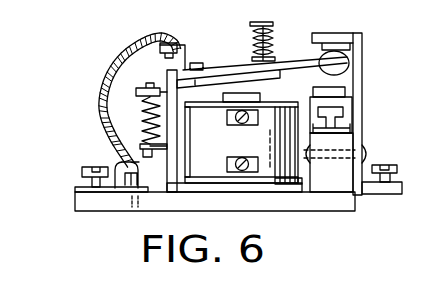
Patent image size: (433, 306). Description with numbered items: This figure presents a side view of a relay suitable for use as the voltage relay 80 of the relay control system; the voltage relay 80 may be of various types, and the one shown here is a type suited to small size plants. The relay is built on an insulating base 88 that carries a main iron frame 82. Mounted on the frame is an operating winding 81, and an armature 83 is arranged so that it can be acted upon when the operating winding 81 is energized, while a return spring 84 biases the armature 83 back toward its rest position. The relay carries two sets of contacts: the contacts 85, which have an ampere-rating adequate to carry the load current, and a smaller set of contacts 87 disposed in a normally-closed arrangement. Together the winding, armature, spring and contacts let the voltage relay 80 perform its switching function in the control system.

The voltage relay 80 is at (98, 71).
The operating winding 81 is at (265, 162).
The main iron frame 82 is at (185, 187).
The armature 83 is at (226, 77).
The return spring 84 is at (148, 118).
The contacts 85 is at (333, 92).
The smaller set of contacts 87 is at (339, 47).
The insulating base 88 is at (343, 190).